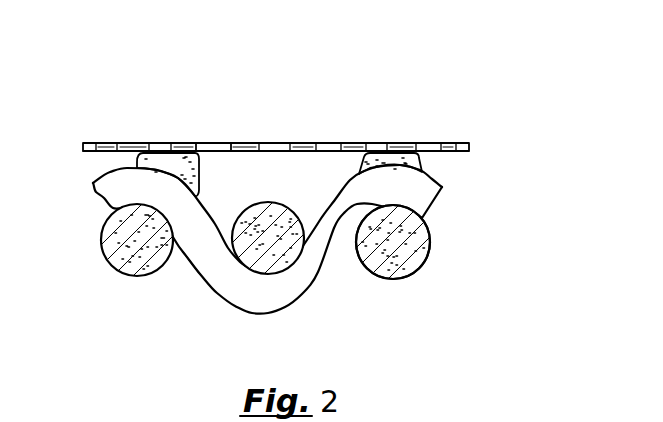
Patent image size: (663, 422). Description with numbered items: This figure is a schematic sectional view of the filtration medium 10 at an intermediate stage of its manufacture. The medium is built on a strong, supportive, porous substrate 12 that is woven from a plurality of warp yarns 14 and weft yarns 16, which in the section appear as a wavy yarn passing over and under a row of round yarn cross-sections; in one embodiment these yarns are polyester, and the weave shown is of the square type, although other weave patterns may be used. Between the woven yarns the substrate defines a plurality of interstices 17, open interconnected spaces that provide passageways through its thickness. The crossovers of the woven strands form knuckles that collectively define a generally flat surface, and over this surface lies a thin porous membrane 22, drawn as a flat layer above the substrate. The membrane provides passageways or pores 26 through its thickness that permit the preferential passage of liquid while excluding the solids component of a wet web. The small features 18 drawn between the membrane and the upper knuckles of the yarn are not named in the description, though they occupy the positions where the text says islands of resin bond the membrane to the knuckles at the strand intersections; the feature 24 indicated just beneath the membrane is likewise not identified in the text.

The filtration medium 10 is at (412, 129).
The substrate 12 is at (431, 246).
The warp yarns 14 is at (292, 297).
The weft yarns 16 is at (398, 278).
The interstices 17 is at (193, 266).
The adhesive pad 18 is at (198, 171).
The porous membrane 22 is at (290, 140).
The lower surface 24 is at (343, 153).
The passageways (pores) 26 is at (200, 140).